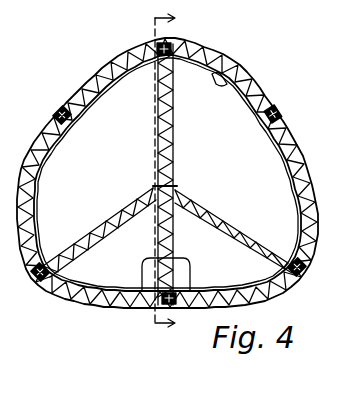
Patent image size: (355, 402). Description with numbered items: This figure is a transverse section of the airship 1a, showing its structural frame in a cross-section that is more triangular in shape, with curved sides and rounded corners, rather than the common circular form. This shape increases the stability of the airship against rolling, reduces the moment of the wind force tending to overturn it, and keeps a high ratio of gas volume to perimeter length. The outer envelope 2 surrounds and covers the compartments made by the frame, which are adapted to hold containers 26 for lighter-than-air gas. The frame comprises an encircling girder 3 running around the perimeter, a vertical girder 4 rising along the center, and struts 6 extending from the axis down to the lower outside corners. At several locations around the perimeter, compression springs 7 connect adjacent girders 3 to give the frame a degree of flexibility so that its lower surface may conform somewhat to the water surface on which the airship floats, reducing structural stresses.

The airship 1a is at (167, 173).
The envelope 2 is at (84, 303).
The encircling girders 3 is at (314, 127).
The vertical girders 4 is at (158, 137).
The struts 6 is at (80, 237).
The compression springs 7 is at (170, 41).
The containers 26 is at (242, 73).